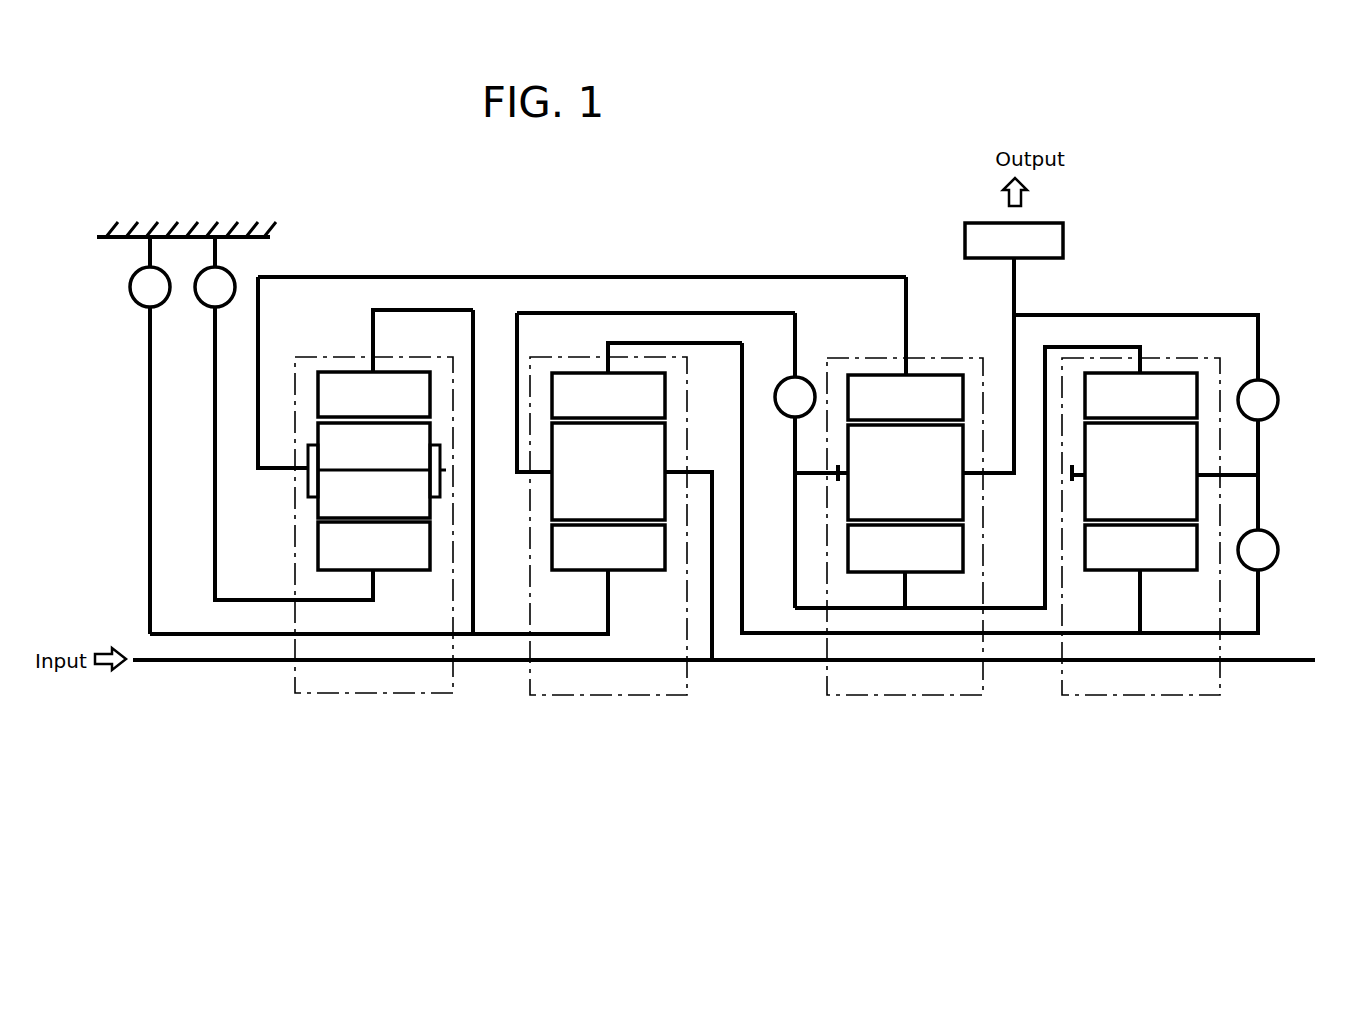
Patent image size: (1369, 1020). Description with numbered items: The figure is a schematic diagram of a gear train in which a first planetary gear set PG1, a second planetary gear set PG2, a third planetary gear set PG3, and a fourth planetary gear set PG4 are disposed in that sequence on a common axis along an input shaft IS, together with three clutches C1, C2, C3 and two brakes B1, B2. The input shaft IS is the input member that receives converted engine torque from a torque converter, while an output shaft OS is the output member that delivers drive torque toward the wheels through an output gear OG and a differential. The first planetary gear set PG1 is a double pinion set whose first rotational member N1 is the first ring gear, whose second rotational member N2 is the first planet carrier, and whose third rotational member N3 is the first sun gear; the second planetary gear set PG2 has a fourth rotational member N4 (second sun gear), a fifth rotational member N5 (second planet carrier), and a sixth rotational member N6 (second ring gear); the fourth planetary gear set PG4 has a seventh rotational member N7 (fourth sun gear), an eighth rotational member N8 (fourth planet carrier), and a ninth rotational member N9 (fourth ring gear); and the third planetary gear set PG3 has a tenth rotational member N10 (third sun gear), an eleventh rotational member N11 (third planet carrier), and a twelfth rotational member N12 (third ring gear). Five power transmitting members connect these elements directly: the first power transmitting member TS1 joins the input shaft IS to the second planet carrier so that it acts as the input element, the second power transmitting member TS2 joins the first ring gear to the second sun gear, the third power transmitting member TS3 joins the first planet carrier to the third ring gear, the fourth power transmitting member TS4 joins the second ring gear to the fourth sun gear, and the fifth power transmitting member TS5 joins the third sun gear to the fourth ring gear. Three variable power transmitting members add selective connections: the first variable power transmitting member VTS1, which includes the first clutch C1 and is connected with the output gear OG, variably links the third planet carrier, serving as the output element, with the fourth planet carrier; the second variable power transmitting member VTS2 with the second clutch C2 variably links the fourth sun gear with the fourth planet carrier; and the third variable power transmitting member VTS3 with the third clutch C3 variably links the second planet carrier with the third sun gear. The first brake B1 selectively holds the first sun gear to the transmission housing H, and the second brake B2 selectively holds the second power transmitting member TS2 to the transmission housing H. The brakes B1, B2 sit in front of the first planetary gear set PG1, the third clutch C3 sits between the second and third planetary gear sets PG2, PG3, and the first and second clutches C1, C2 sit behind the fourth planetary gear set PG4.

The transmission housing H is at (165, 233).
The first brake B1 is at (284, 418).
The second brake B2 is at (150, 435).
The first clutch C1 is at (1258, 427).
The second clutch C2 is at (1258, 522).
The third clutch C3 is at (795, 460).
The first rotational member N1 is at (395, 363).
The second rotational member N2 is at (270, 476).
The third rotational member N3 is at (374, 546).
The fourth rotational member N4 is at (608, 547).
The fifth rotational member N5 is at (525, 478).
The sixth rotational member N6 is at (647, 380).
The seventh rotational member N7 is at (1141, 579).
The eighth rotational member N8 is at (1228, 478).
The ninth rotational member N9 is at (1141, 395).
The tenth rotational member N10 is at (905, 566).
The eleventh rotational member N11 is at (838, 473).
The twelfth rotational member N12 is at (905, 348).
The first planetary gear set PG1 is at (371, 710).
The second planetary gear set PG2 is at (608, 710).
The third planetary gear set PG3 is at (903, 710).
The fourth planetary gear set PG4 is at (1138, 710).
The first power transmitting member TS1 is at (713, 665).
The second power transmitting member TS2 is at (497, 638).
The third power transmitting member TS3 is at (806, 276).
The fourth power transmitting member TS4 is at (1025, 640).
The fifth power transmitting member TS5 is at (1044, 571).
The first variable power transmitting member VTS1 is at (1116, 313).
The second variable power transmitting member VTS2 is at (1262, 632).
The third variable power transmitting member VTS3 is at (716, 313).
The output gear OG is at (1014, 240).
The output shaft OS is at (1012, 284).
The input shaft IS is at (222, 664).